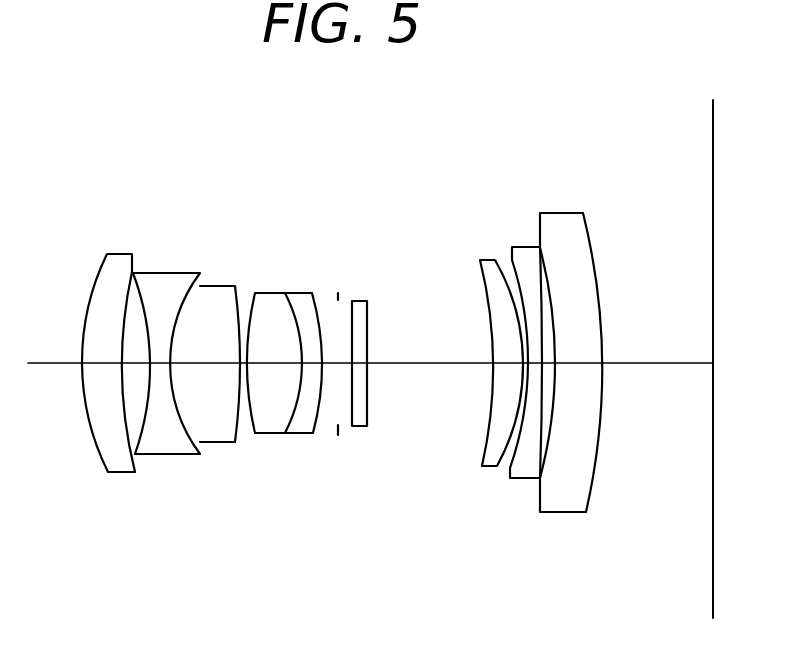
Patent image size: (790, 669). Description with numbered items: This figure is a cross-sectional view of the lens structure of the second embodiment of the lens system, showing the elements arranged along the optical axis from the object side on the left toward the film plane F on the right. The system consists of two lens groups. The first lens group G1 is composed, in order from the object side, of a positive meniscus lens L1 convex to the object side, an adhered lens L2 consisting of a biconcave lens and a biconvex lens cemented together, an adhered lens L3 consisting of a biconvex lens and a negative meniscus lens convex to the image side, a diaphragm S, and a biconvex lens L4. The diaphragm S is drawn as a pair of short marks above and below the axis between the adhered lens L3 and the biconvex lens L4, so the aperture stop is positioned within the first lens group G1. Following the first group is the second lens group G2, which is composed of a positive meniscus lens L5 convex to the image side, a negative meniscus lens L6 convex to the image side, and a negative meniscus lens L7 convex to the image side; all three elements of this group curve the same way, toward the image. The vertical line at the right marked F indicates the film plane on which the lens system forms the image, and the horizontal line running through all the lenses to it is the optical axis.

The positive meniscus lens L1 is at (120, 252).
The adhered lens L2 is at (235, 263).
The adhered lens L3 is at (312, 283).
The biconvex lens L4 is at (362, 300).
The positive meniscus lens L5 is at (487, 260).
The negative meniscus lens L6 is at (521, 246).
The negative meniscus lens L7 is at (563, 213).
The first lens group G1 is at (387, 160).
The second lens group G2 is at (602, 160).
The diaphragm S is at (338, 292).
The film plane F is at (711, 340).